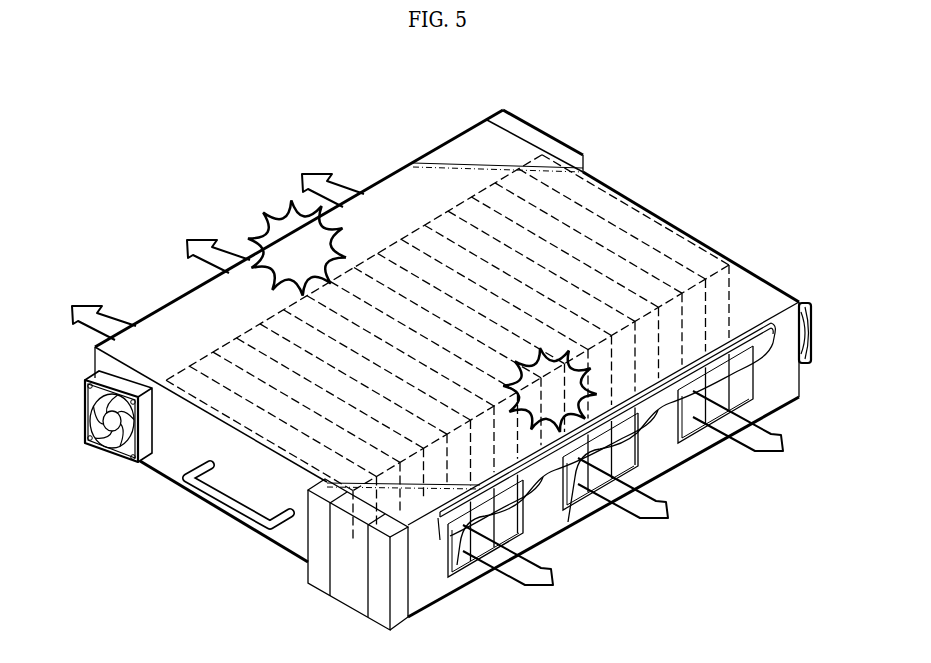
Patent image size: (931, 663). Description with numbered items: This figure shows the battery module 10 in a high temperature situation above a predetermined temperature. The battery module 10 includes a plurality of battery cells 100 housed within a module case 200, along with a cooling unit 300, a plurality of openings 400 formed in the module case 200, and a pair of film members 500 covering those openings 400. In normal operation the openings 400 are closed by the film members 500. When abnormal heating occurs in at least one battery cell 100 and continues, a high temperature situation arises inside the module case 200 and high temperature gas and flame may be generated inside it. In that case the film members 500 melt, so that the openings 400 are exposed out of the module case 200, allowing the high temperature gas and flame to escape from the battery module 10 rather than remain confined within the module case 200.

The battery module 10 is at (225, 132).
The battery cell 100 is at (624, 237).
The module case 200 is at (386, 180).
The cooling unit 300 is at (103, 458).
The opening 400 is at (650, 470).
The film member 500 is at (547, 513).